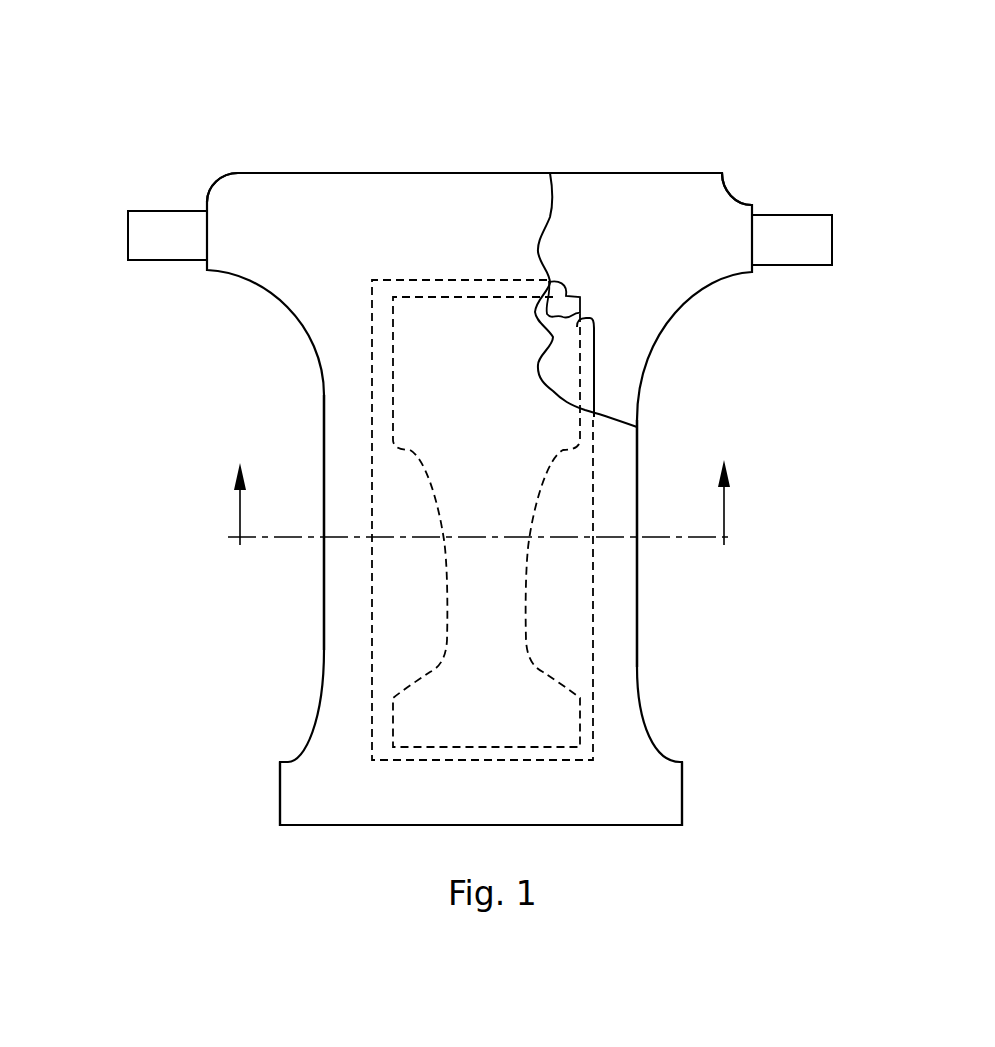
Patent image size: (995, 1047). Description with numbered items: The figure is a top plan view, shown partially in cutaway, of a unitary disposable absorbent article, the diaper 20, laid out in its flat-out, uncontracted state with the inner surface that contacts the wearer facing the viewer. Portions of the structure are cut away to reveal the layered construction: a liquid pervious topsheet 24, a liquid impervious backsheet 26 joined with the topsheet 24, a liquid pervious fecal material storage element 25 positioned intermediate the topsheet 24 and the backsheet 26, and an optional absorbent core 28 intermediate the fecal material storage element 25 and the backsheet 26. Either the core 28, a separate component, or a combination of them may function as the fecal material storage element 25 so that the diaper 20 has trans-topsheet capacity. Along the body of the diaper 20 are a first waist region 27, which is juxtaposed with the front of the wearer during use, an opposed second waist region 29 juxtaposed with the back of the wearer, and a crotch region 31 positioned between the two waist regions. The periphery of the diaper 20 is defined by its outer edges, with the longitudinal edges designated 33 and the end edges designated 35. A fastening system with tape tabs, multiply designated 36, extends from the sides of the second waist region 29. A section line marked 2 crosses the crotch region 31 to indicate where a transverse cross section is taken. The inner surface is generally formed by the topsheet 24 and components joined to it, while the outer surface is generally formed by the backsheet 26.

The diaper 20 is at (252, 147).
The topsheet 24 is at (638, 447).
The fecal material storage element 25 is at (588, 372).
The backsheet 26 is at (660, 290).
The first waist region 27 is at (553, 805).
The absorbent core 28 is at (580, 307).
The second waist region 29 is at (395, 222).
The crotch region 31 is at (343, 565).
The longitudinal edges 33 is at (323, 447).
The end edges 35 is at (582, 173).
The tape tabs 36 is at (175, 230).
The section line 2- 2 is at (482, 502).